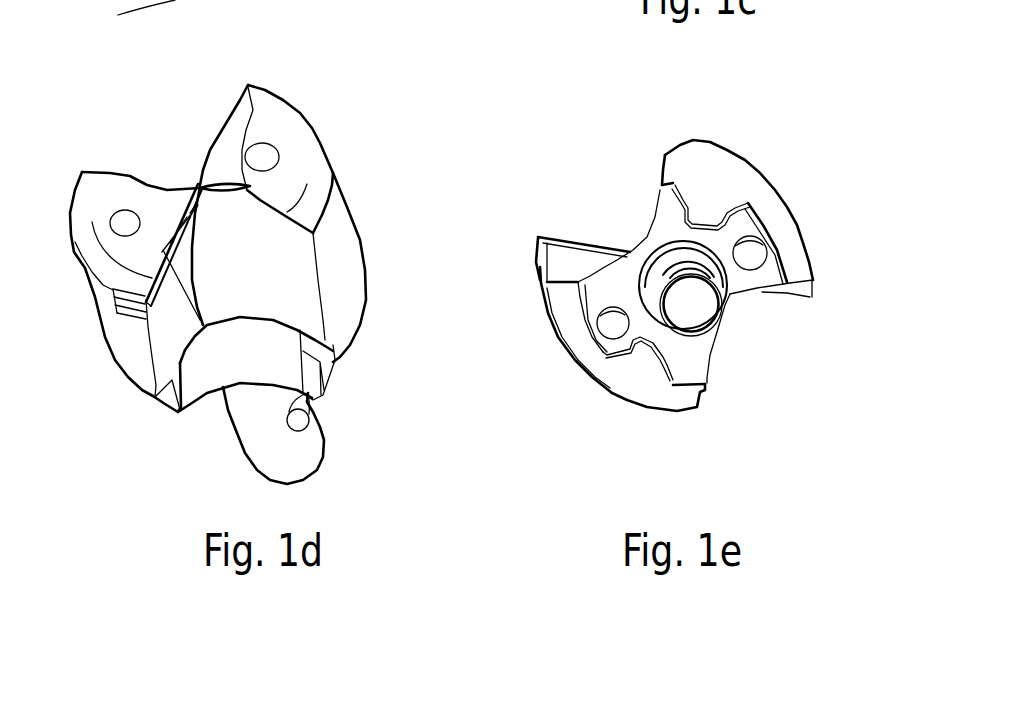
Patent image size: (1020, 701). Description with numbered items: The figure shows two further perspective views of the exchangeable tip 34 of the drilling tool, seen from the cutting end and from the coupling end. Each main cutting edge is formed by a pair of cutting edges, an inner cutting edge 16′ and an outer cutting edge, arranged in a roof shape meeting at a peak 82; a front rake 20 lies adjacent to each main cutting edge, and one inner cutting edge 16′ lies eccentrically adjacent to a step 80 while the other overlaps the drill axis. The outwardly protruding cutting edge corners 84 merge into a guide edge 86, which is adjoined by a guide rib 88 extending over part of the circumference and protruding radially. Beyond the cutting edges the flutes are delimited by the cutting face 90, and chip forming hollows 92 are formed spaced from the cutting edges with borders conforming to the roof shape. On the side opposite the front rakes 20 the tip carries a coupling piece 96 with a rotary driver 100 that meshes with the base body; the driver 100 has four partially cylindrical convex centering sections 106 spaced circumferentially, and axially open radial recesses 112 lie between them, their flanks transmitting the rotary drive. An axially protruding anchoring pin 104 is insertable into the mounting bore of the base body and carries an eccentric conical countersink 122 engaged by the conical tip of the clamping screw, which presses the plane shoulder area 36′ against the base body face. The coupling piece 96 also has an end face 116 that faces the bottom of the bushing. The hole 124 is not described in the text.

In FIG. 1D, the front rake 20 is at (87, 190).
In FIG. 1D, the hole 124 is at (127, 220).
In FIG. 1D, the inner cutting edge 16′ is at (193, 192).
In FIG. 1D, the peak 82 is at (165, 255).
In FIG. 1D, the chip forming hollow 92 is at (178, 212).
In FIG. 1E, the chip forming hollow 92 is at (563, 243).
In FIG. 1D, the step 80 is at (192, 178).
In FIG. 1D, the cutting edge corner 84 is at (247, 84).
In FIG. 1D, the guide rib 88 is at (117, 308).
In FIG. 1E, the guide rib 88 is at (535, 257).
In FIG. 1D, the guide edge 86 is at (146, 326).
In FIG. 1E, the guide edge 86 is at (537, 240).
In FIG. 1D, the exchangeable tip 34 is at (340, 252).
In FIG. 1E, the exchangeable tip 34 is at (575, 349).
In FIG. 1D, the cutting face 90 is at (170, 323).
In FIG. 1E, the cutting face 90 is at (587, 263).
In FIG. 1D, the anchoring pin 104 is at (290, 450).
In FIG. 1E, the anchoring pin 104 is at (727, 308).
In FIG. 1D, the conical countersink 122 is at (298, 420).
In FIG. 1E, the shoulder area 36′ is at (730, 180).
In FIG. 1E, the radial recess 112 is at (703, 213).
In FIG. 1E, the end face 116 is at (770, 270).
In FIG. 1E, the rotary driver 100 is at (657, 197).
In FIG. 1E, the convex centering section 106 is at (662, 172).
In FIG. 1E, the coupling piece 96 is at (675, 369).